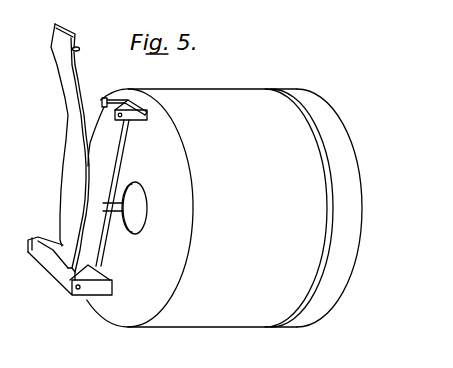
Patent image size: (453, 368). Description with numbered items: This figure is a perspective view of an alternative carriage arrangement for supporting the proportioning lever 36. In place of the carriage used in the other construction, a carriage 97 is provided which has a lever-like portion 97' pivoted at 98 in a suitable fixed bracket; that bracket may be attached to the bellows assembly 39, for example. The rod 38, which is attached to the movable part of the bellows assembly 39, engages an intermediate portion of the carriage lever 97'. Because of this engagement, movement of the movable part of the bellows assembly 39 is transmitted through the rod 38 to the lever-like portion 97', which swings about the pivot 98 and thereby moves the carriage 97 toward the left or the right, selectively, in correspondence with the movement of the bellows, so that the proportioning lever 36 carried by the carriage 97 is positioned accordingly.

The proportioning lever 36 is at (63, 93).
The rod 38 is at (136, 204).
The bellows assembly 39 is at (227, 90).
The carriage 97 is at (70, 279).
The lever-like portion 97' is at (122, 193).
The pivot 98 is at (103, 97).